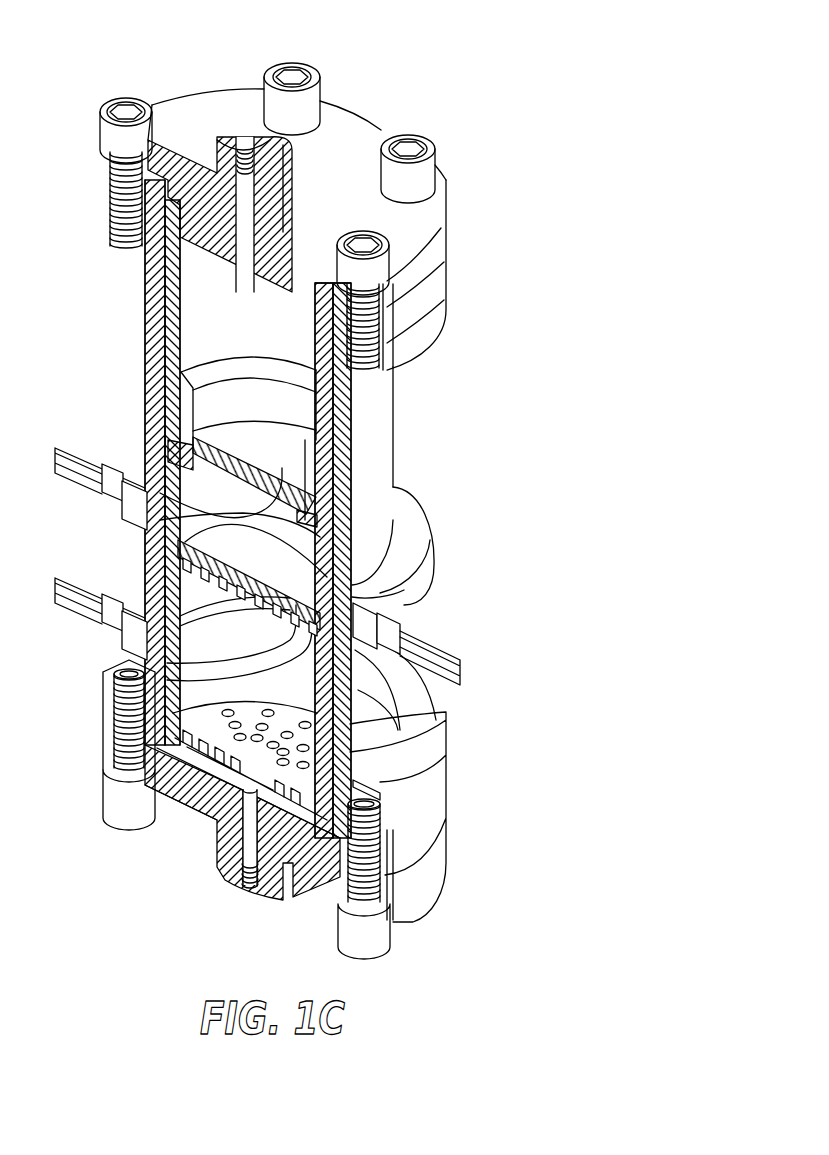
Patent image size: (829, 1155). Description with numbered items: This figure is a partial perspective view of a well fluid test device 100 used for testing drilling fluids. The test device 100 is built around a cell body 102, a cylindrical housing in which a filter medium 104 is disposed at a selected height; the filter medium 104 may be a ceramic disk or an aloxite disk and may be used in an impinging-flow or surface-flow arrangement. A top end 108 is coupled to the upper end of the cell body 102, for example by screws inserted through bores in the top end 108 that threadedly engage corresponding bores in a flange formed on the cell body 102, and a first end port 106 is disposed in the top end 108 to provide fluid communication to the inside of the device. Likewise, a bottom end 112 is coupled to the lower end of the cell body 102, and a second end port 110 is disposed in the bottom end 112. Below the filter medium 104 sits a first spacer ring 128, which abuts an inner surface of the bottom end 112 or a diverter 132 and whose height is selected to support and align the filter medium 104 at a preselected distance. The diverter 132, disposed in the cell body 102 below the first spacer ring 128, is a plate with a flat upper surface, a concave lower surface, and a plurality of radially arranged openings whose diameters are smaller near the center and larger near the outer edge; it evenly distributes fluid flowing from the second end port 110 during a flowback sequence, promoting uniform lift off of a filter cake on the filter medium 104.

The well fluid test device 100 is at (428, 58).
The cell body 102 is at (387, 440).
The filter medium 104 is at (247, 560).
The first end port 106 is at (247, 147).
The top end 108 is at (182, 118).
The second end port 110 is at (250, 882).
The bottom end 112 is at (225, 843).
The first spacer ring 128 is at (210, 690).
The diverter 132 is at (127, 722).